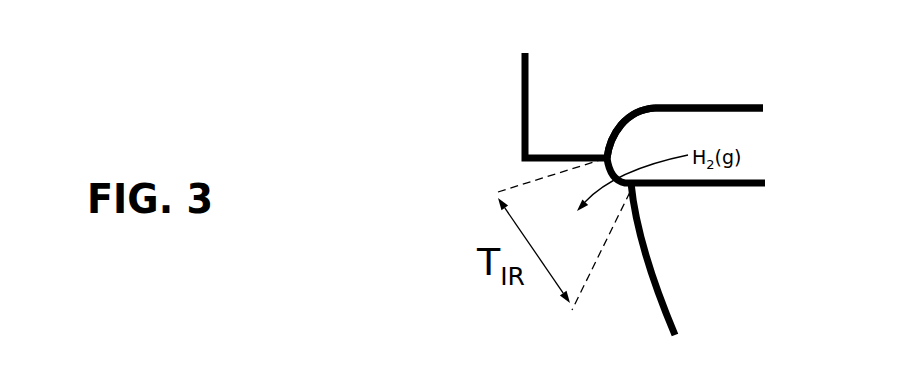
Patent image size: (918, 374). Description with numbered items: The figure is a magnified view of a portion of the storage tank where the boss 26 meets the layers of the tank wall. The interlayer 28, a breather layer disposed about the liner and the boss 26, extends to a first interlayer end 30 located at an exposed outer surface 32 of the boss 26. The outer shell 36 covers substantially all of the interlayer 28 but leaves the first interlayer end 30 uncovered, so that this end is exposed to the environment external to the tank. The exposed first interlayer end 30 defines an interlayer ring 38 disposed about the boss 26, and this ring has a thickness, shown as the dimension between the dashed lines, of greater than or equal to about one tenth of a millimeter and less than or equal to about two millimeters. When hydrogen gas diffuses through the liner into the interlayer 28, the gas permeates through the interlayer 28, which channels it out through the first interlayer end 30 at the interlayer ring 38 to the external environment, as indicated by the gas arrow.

The boss 26 is at (550, 79).
The interlayer 28 is at (679, 143).
The first interlayer end 30 is at (613, 175).
The exposed outer surface 32 is at (552, 161).
The outer shell 36 is at (689, 223).
The interlayer ring 38 is at (631, 133).